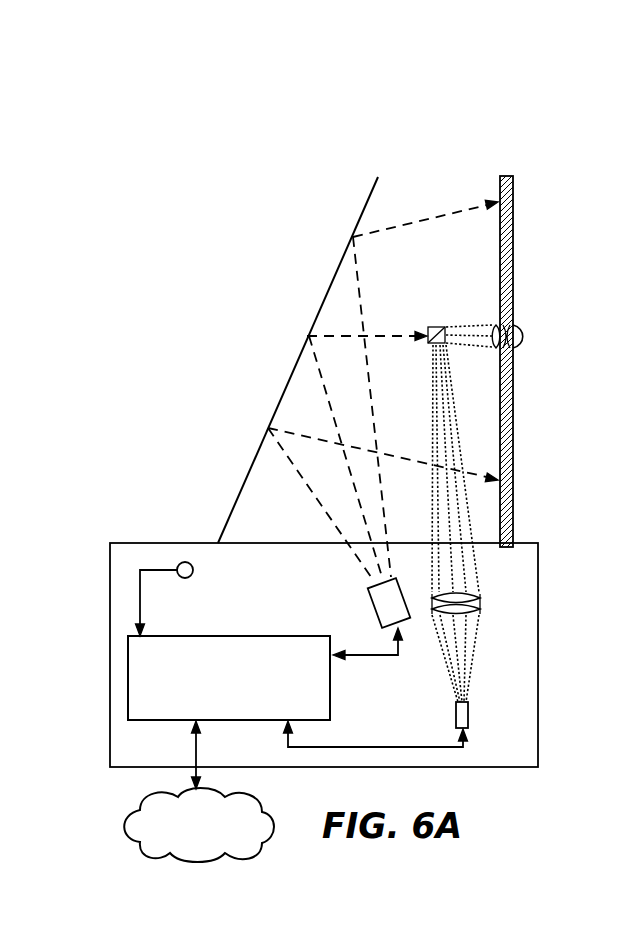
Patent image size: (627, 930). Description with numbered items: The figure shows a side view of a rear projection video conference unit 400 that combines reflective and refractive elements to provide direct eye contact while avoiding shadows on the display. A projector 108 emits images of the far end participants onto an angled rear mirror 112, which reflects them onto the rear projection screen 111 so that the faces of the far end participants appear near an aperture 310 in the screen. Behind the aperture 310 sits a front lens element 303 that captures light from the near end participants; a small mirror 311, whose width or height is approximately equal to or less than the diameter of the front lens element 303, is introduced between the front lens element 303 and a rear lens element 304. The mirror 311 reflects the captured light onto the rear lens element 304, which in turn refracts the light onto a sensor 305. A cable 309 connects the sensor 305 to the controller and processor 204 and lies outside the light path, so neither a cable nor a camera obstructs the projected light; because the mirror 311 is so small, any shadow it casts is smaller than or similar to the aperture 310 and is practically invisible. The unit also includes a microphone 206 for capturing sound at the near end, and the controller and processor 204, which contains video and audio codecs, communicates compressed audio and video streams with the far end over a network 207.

The video conference unit 400 is at (434, 87).
The rear mirror 112 is at (366, 204).
The rear projection screen 111 is at (514, 190).
The front lens element 303 is at (525, 330).
The aperture 310 is at (522, 348).
The mirror 311 is at (443, 327).
The projector 108 is at (373, 600).
The microphone 206 is at (182, 578).
The controller and processor 204 is at (229, 678).
The rear lens element 304 is at (492, 600).
The sensor 305 is at (470, 712).
The cable 309 is at (352, 747).
The network 207 is at (199, 825).